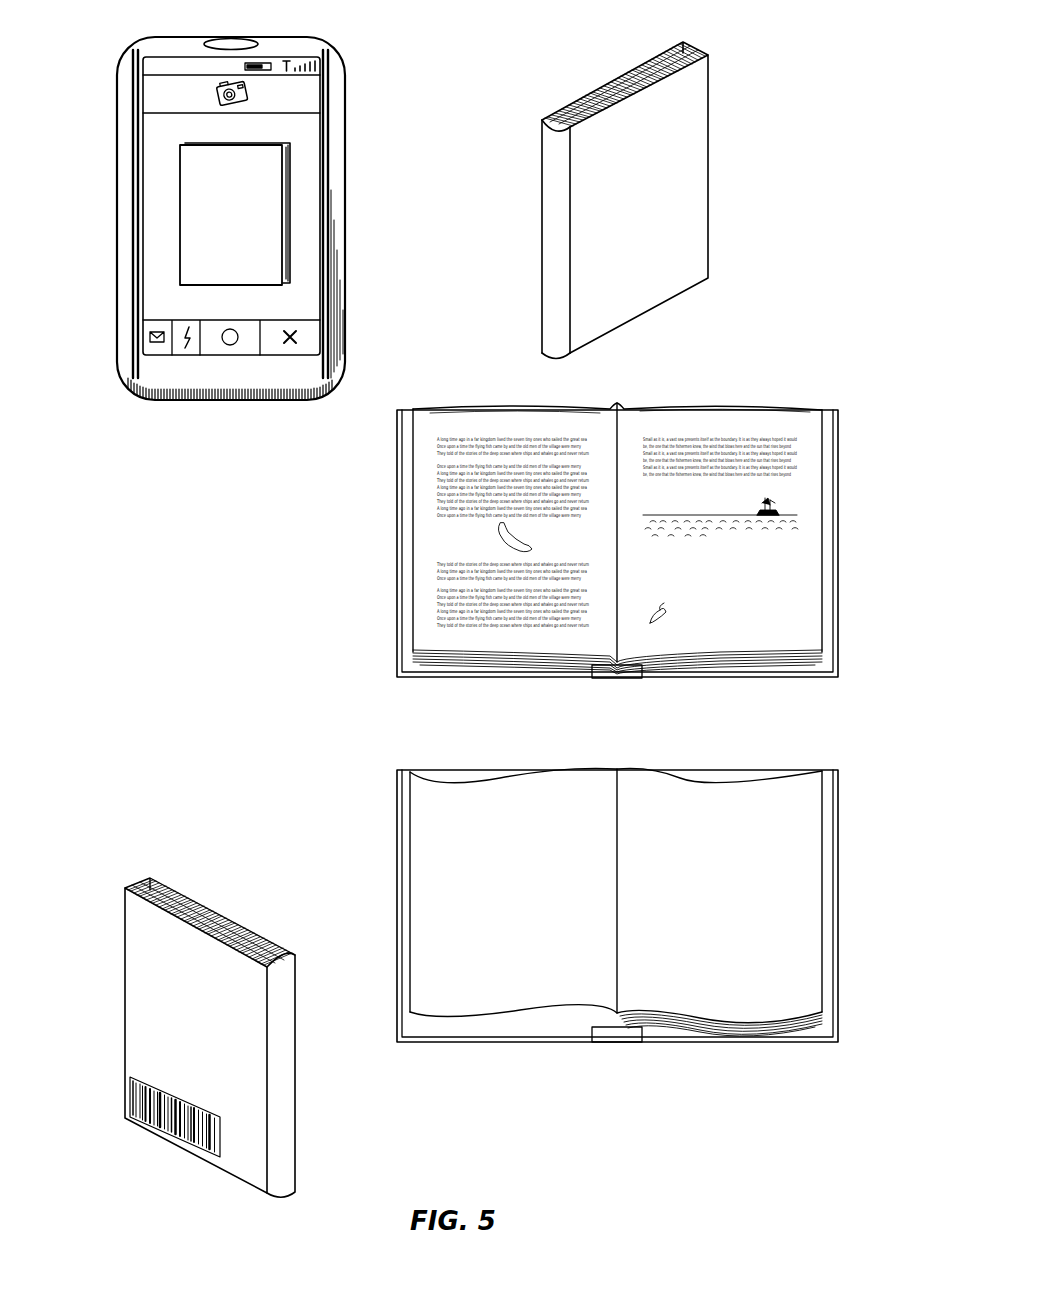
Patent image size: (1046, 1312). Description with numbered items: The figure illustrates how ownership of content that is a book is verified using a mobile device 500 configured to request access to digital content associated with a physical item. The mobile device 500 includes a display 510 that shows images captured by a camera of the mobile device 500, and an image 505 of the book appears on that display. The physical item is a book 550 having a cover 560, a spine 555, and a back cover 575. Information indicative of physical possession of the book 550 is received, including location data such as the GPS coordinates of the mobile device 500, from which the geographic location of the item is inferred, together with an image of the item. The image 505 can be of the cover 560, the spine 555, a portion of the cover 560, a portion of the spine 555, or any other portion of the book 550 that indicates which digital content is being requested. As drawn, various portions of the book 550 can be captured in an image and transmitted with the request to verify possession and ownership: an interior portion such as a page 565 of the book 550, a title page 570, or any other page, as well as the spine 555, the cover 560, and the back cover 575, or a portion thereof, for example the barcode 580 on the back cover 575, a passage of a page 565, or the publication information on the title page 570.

The mobile device 500 is at (118, 55).
The image 505 is at (158, 170).
The display 510 is at (195, 252).
The book 550 is at (444, 617).
The spine 555 is at (553, 192).
The cover 560 is at (692, 182).
The page 565 is at (422, 618).
The title page 570 is at (717, 793).
The back cover 575 is at (133, 1025).
The barcode 580 is at (153, 1123).